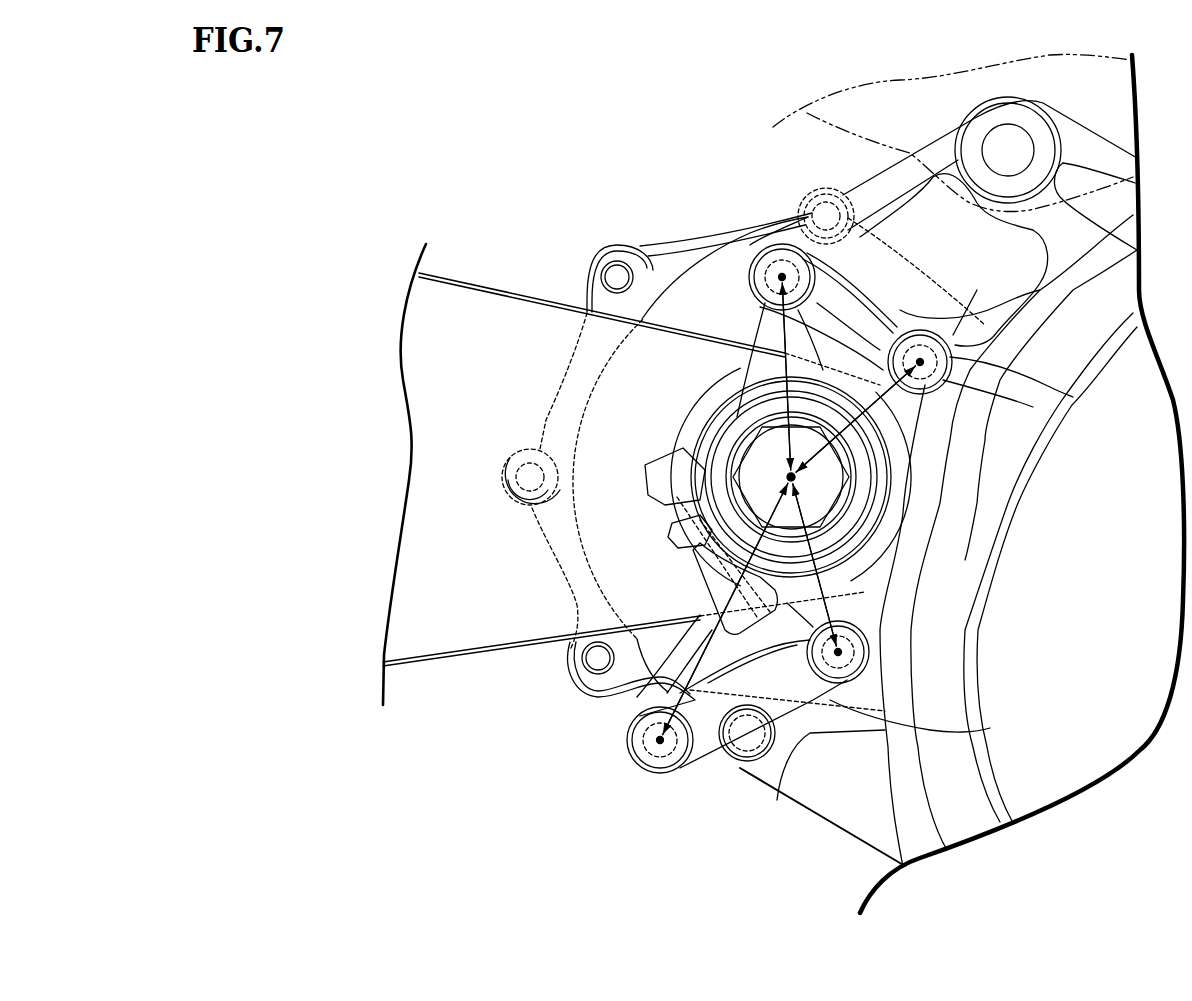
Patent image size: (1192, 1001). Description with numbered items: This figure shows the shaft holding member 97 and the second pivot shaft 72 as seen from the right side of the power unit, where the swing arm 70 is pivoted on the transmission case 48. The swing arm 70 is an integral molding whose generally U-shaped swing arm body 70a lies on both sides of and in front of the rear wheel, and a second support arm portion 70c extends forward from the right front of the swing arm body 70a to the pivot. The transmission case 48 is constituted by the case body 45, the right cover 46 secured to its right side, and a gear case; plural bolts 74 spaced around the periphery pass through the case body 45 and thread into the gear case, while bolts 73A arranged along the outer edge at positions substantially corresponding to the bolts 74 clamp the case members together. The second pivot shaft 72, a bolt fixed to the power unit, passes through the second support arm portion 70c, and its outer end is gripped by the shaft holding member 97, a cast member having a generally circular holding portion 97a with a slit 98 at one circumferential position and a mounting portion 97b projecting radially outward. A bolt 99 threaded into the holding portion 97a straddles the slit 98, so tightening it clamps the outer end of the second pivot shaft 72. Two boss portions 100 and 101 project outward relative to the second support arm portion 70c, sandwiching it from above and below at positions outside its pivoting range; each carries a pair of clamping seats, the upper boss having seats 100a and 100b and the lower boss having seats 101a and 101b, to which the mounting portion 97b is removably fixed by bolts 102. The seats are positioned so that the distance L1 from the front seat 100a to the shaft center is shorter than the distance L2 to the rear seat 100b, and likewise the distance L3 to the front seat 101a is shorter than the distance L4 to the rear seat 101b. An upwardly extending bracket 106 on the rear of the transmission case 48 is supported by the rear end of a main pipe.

The swing arm 70 is at (473, 274).
The swing arm body 70a is at (430, 372).
The second support arm portion 70c is at (735, 348).
The case body 45 is at (650, 263).
The bolt 73A is at (610, 278).
The bolt 74 is at (813, 210).
The second pivot shaft 72 is at (727, 443).
The shaft holding member 97 is at (711, 411).
The holding portion 97a is at (882, 470).
The mounting portion 97b is at (868, 610).
The slit 98 is at (683, 523).
The bolt 99 is at (663, 463).
The boss portion 100 is at (893, 312).
The clamping seat 100a is at (1050, 375).
The clamping seat 100b is at (770, 245).
The boss portion 101 is at (782, 790).
The clamping seat 101a is at (948, 724).
The clamping seat 101b is at (627, 740).
The bolt 102 is at (782, 262).
The bracket 106 is at (990, 122).
The right cover 46 is at (1067, 770).
The transmission case 48 is at (858, 849).
The distance L1 is at (950, 440).
The distance L2 is at (781, 377).
The distance L3 is at (868, 553).
The distance L4 is at (727, 577).